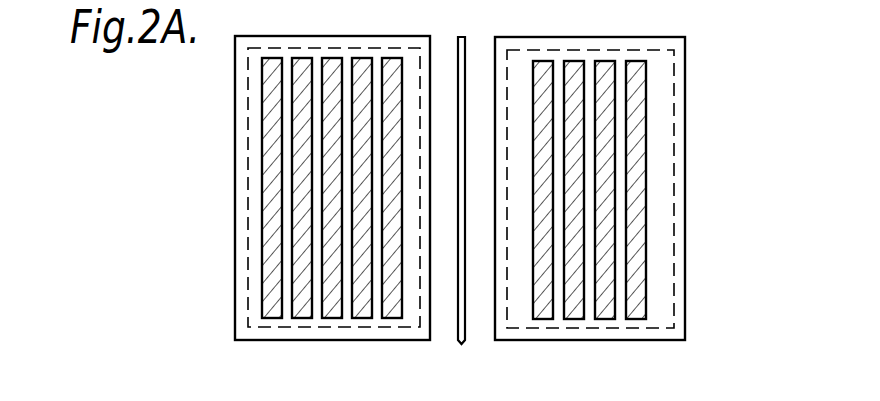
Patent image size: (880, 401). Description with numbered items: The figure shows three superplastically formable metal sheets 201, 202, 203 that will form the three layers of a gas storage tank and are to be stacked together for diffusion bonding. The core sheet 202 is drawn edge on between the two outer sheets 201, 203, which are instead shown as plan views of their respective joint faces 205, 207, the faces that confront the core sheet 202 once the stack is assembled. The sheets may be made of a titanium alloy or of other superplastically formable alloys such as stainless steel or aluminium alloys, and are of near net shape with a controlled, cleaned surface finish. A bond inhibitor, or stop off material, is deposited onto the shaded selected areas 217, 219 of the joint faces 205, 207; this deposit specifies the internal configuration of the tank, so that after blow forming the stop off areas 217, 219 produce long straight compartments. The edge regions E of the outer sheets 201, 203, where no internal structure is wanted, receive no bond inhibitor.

The outer metal sheet 201 is at (230, 105).
The core sheet 202 is at (462, 345).
The outer metal sheet 203 is at (690, 105).
The joint face 205 is at (250, 133).
The joint face 207 is at (660, 135).
The stop off area 217 is at (272, 271).
The stop off area 219 is at (637, 253).
The edge region E is at (238, 200).